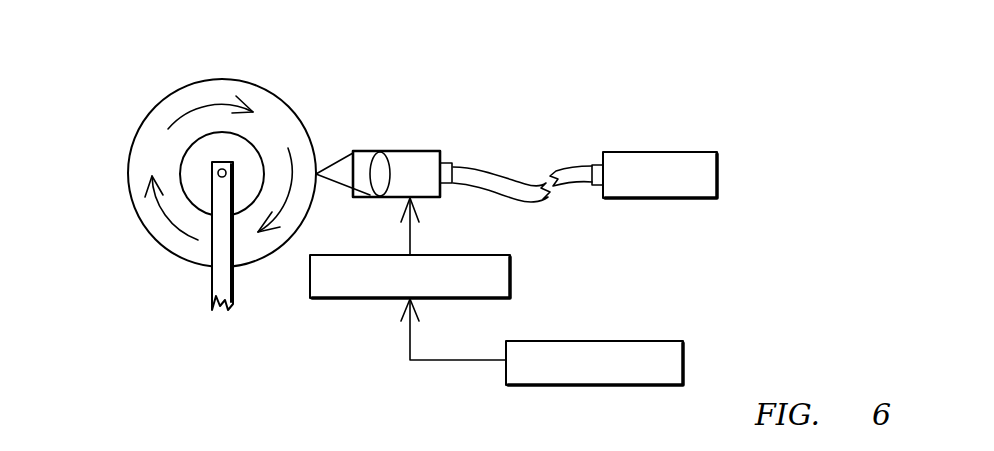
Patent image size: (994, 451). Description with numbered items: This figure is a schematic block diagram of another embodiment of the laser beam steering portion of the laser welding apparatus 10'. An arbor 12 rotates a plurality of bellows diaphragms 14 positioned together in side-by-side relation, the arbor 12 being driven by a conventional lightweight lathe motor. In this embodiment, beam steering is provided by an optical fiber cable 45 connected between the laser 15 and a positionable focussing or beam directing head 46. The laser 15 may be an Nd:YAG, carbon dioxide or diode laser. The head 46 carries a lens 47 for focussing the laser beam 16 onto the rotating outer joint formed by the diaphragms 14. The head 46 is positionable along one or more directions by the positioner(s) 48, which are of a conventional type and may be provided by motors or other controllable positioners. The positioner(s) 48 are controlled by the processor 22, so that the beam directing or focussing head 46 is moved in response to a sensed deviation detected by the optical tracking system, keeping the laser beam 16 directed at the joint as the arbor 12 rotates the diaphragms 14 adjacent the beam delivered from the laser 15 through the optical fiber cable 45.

The laser welding apparatus 10' is at (802, 80).
The arbor 12 is at (197, 155).
The bellows diaphragms 14 is at (204, 80).
The laser 15 is at (670, 152).
The laser beam 16 is at (343, 162).
The processor 22 is at (603, 341).
The optical fiber cable 45 is at (515, 183).
The focussing or beam directing head 46 is at (410, 150).
The lens 47 is at (382, 162).
The positioner(s) 48 is at (512, 278).